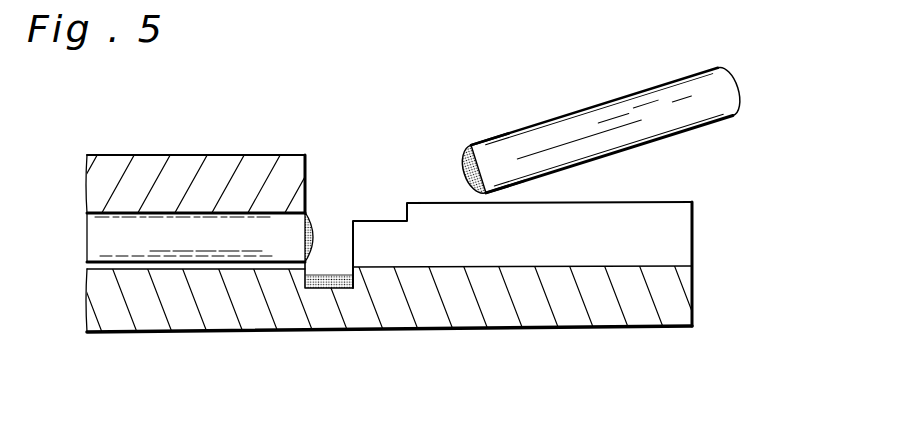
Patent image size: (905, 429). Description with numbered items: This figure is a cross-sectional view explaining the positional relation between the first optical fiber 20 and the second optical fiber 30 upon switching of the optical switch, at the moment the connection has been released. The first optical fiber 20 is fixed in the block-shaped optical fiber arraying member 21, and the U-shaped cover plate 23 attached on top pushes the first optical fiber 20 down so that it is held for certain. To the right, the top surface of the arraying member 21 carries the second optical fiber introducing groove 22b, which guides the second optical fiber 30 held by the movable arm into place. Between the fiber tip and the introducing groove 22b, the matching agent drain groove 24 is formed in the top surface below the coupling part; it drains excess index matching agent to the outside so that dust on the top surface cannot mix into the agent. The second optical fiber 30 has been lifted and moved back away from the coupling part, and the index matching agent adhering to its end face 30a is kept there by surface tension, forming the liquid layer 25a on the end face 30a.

The first optical fiber 20 is at (129, 246).
The optical fiber arraying member 21 is at (206, 312).
The second optical fiber introducing groove 22b is at (695, 241).
The cover plate 23 is at (210, 172).
The matching agent drain groove 24 is at (330, 262).
The liquid layer 25a is at (463, 163).
The second optical fiber 30 is at (716, 84).
The end face of second optical fiber 30a is at (489, 150).